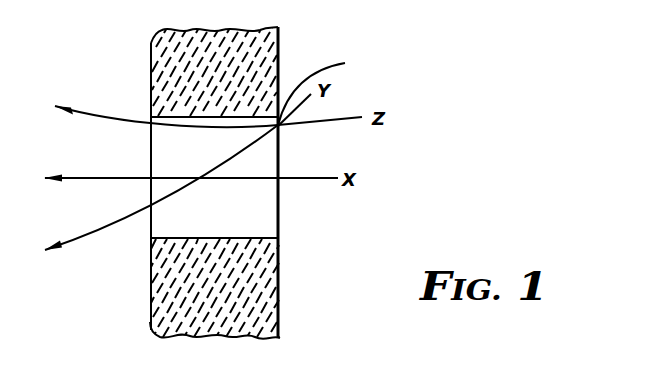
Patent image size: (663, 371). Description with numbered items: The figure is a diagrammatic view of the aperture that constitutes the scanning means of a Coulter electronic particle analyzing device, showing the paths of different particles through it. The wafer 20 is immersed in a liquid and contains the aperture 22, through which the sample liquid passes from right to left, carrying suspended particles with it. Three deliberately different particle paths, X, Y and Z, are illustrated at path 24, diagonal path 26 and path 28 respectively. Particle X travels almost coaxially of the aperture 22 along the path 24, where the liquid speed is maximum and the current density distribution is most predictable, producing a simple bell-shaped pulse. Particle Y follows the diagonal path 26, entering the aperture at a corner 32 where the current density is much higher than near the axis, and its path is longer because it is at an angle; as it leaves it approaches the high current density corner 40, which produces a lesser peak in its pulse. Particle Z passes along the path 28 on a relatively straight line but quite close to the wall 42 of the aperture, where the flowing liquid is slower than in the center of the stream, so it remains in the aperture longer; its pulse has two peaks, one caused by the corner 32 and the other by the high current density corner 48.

The wafer 20 is at (278, 73).
The aperture 22 is at (262, 210).
The path 24 is at (125, 155).
The diagonal path 26 is at (115, 230).
The path 28 is at (118, 121).
The corner 32 is at (329, 90).
The corner 40 is at (152, 240).
The wall 42 is at (222, 118).
The corner 48 is at (151, 113).